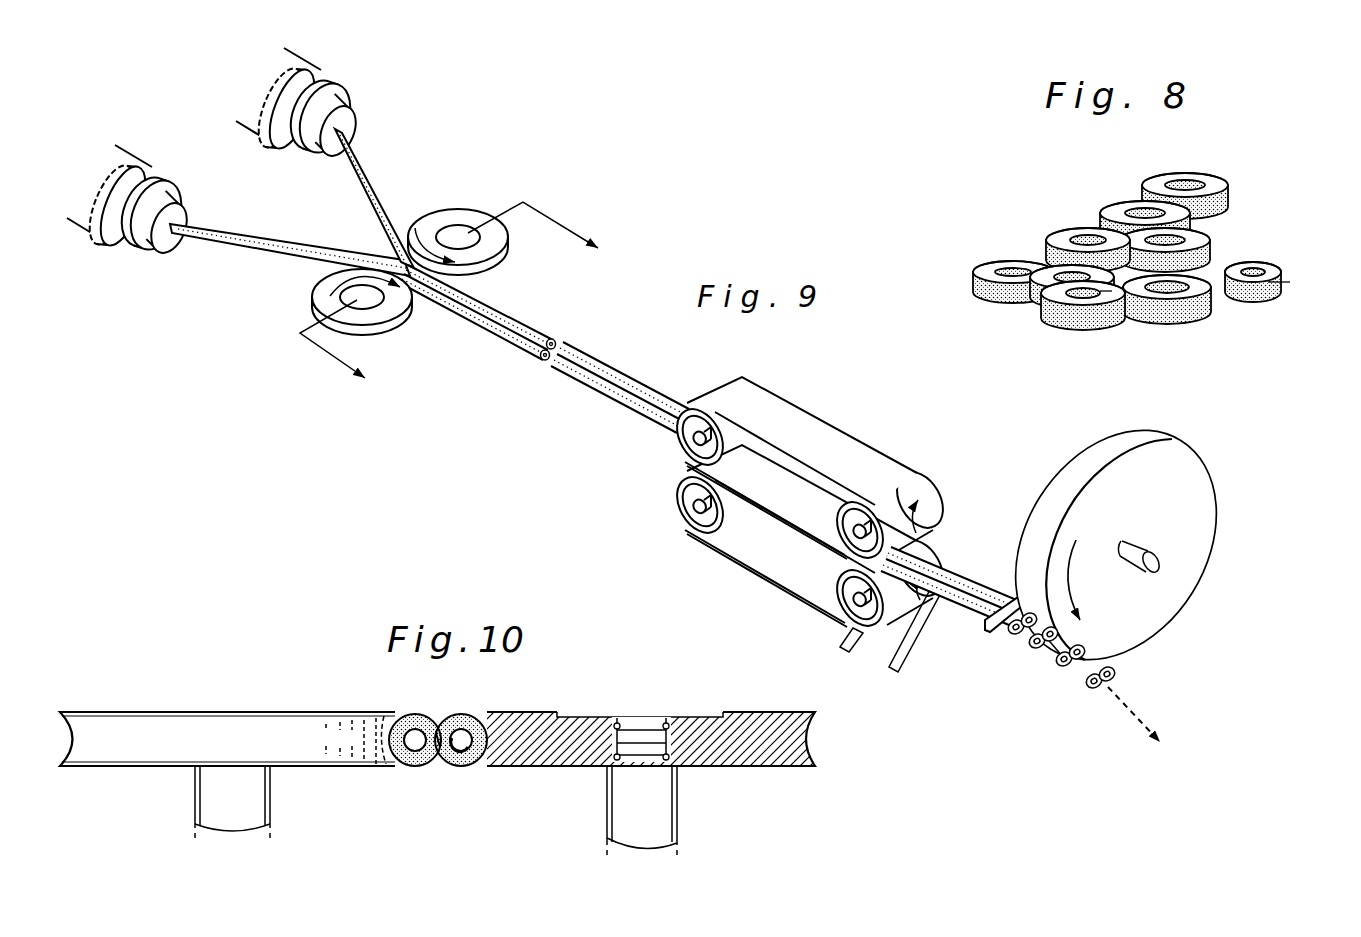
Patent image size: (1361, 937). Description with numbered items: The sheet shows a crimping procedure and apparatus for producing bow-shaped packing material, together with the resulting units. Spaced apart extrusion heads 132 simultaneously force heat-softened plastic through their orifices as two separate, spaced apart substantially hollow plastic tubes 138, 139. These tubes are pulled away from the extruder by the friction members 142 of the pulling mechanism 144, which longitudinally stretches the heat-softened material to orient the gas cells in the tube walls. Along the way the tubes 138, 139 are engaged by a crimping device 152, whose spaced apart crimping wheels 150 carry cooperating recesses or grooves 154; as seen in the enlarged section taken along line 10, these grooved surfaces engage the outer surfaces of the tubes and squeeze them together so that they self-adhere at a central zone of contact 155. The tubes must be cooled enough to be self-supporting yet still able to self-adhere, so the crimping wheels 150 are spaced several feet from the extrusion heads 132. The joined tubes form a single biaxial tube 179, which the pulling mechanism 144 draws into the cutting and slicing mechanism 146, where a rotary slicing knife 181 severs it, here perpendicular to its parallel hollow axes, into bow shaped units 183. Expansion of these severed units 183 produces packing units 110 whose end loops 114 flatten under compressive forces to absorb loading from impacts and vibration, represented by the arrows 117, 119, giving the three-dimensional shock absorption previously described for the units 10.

In FIG. 9, the packing units 10 is at (463, 301).
In FIG. 8, the packing units 110 is at (1158, 243).
In FIG. 8, the end loops 114 is at (1080, 297).
In FIG. 8, the arrows 117 is at (1276, 262).
In FIG. 8, the arrows 119 is at (1291, 282).
In FIG. 9, the extrusion heads 132 is at (343, 98).
In FIG. 9, the hollow plastic tube 138 is at (250, 237).
In FIG. 10, the hollow plastic tube 138 is at (413, 723).
In FIG. 9, the hollow plastic tube 139 is at (375, 195).
In FIG. 10, the hollow plastic tube 139 is at (461, 722).
In FIG. 9, the friction members 142 is at (817, 427).
In FIG. 9, the pulling mechanism 144 is at (831, 515).
In FIG. 9, the cutting and slicing mechanism 146 is at (1062, 463).
In FIG. 9, the crimping wheels 150 is at (462, 213).
In FIG. 10, the crimping wheels 150 is at (167, 711).
In FIG. 9, the crimping device 152 is at (463, 249).
In FIG. 10, the crimping device 152 is at (474, 720).
In FIG. 10, the recesses or grooves 154 is at (335, 725).
In FIG. 9, the central zone of contact 155 is at (556, 332).
In FIG. 8, the central zone of contact 155 is at (1112, 291).
In FIG. 10, the central zone of contact 155 is at (448, 763).
In FIG. 9, the biaxial tube 179 is at (714, 419).
In FIG. 9, the rotary slicing knife 181 is at (993, 628).
In FIG. 9, the bow shaped units 183 is at (1081, 689).